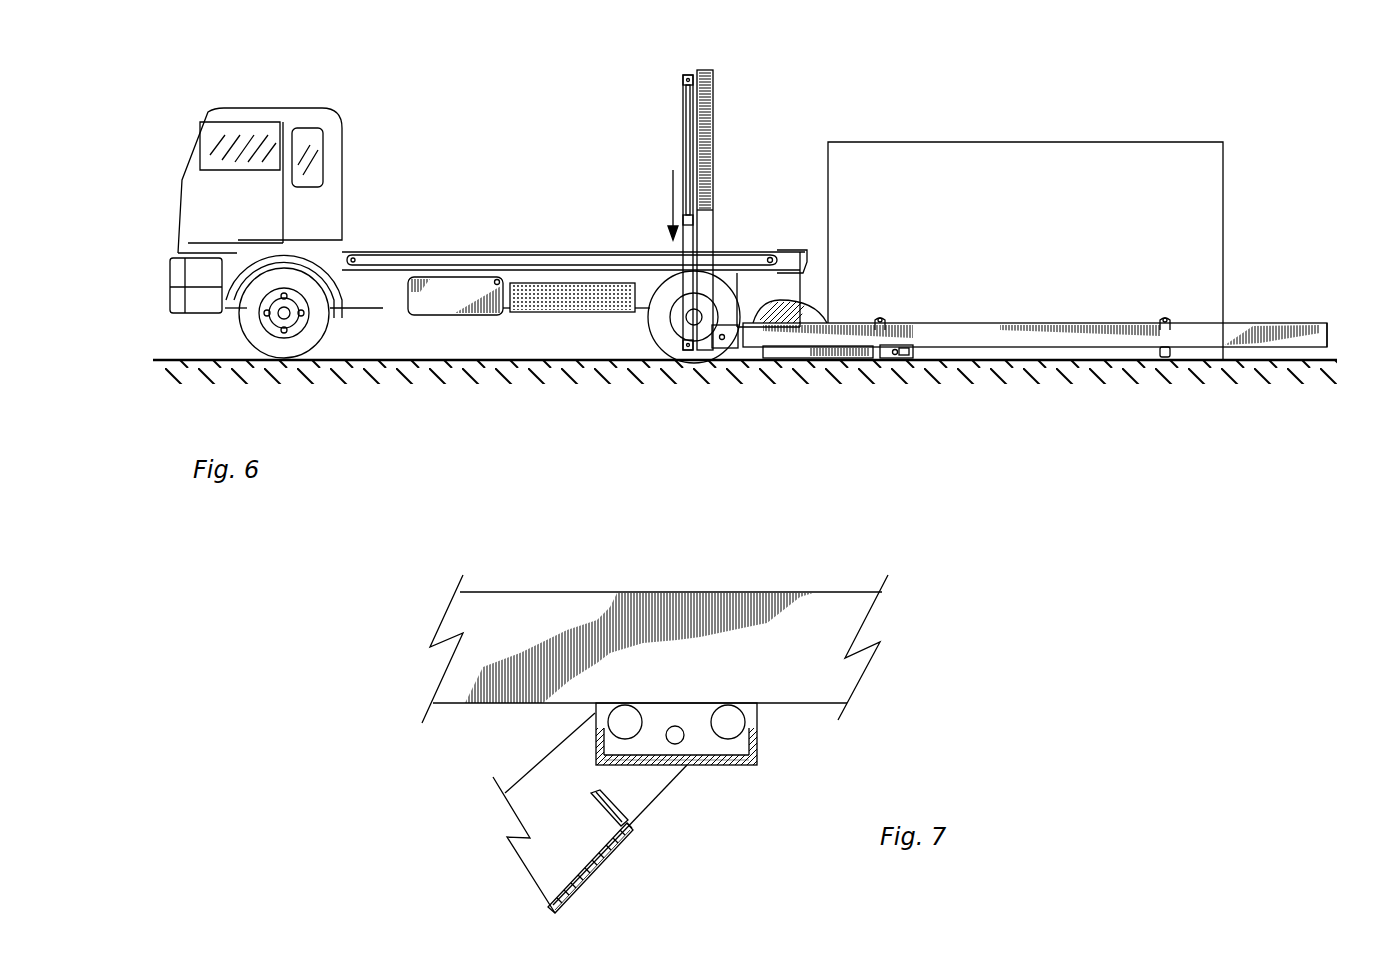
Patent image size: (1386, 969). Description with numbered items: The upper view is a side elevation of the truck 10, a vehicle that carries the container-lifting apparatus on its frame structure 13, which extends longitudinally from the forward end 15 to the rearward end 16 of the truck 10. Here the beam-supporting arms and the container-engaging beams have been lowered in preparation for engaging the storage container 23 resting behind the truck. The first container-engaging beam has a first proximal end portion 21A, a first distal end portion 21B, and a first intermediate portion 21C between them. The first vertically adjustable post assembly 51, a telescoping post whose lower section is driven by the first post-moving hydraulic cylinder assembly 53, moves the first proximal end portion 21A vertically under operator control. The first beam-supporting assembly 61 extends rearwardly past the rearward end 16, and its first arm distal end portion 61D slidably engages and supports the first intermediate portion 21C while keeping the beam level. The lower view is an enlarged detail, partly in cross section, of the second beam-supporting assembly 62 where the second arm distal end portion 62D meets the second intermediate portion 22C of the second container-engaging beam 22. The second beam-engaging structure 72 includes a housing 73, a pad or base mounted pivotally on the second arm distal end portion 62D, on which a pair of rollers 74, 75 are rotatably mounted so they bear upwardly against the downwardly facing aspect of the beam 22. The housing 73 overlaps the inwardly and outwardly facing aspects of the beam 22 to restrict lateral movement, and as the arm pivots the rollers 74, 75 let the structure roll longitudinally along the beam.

In FIG. 6, the truck 10 is at (257, 93).
In FIG. 6, the frame structure 13 is at (383, 300).
In FIG. 6, the forward end 15 is at (160, 305).
In FIG. 6, the rearward end 16 is at (805, 268).
In FIG. 6, the first proximal end portion 21A is at (750, 333).
In FIG. 6, the first distal end portion 21B is at (1320, 333).
In FIG. 6, the first intermediate portion 21C is at (938, 338).
In FIG. 6, the storage container 23 is at (866, 148).
In FIG. 6, the first vertically adjustable post assembly 51 is at (705, 128).
In FIG. 6, the first post-moving hydraulic cylinder assembly 53 is at (686, 160).
In FIG. 6, the first beam-supporting assembly 61 is at (780, 348).
In FIG. 6, the first arm distal end portion 61D is at (897, 357).
In FIG. 7, the second container-engaging beam 22 is at (542, 592).
In FIG. 7, the second intermediate portion 22C is at (835, 608).
In FIG. 7, the second beam-supporting assembly 62 is at (592, 871).
In FIG. 7, the second arm distal end portion 62D is at (585, 735).
In FIG. 7, the second beam-engaging structure 72 is at (697, 770).
In FIG. 7, the housing 73 is at (753, 742).
In FIG. 7, the roller 74 is at (625, 705).
In FIG. 7, the roller 75 is at (728, 705).